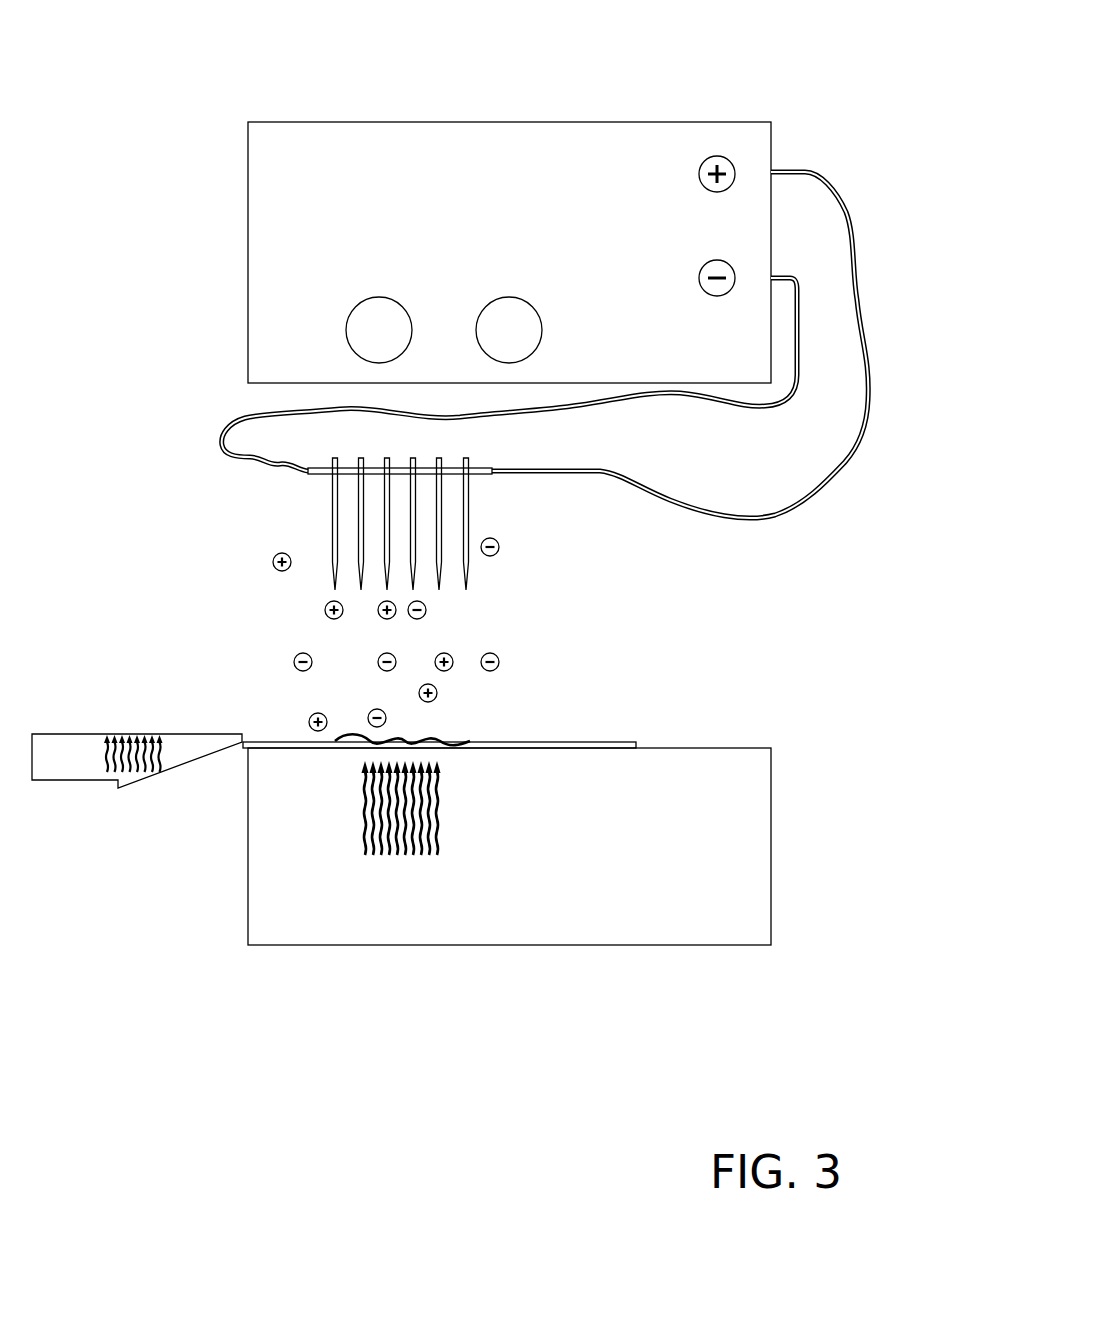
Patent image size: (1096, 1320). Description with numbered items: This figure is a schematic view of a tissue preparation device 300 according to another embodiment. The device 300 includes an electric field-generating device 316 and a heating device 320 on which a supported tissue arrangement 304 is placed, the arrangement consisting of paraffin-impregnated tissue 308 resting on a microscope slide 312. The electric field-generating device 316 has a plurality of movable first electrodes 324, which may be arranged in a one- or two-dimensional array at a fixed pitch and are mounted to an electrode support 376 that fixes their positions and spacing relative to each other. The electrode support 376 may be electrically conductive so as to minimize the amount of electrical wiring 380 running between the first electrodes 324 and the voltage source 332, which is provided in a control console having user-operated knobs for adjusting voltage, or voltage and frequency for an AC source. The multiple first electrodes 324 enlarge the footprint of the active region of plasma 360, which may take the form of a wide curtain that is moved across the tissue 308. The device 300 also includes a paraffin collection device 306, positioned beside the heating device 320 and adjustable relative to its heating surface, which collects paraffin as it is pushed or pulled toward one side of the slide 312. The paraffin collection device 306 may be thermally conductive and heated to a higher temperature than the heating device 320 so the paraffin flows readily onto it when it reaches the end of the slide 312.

The tissue preparation device 300 is at (150, 116).
The electric field-generating device 316 is at (158, 282).
The voltage source 332 is at (558, 122).
The electrical wiring 380 is at (230, 418).
The electrode support 376 is at (480, 477).
The first electrodes 324 is at (332, 522).
The plasma 360 is at (255, 628).
The paraffin collection device 306 is at (73, 734).
The microscope slide 312 is at (618, 743).
The paraffin-impregnated tissue 308 is at (445, 737).
The heating device 320 is at (172, 865).
The supported tissue arrangement 304 is at (598, 688).